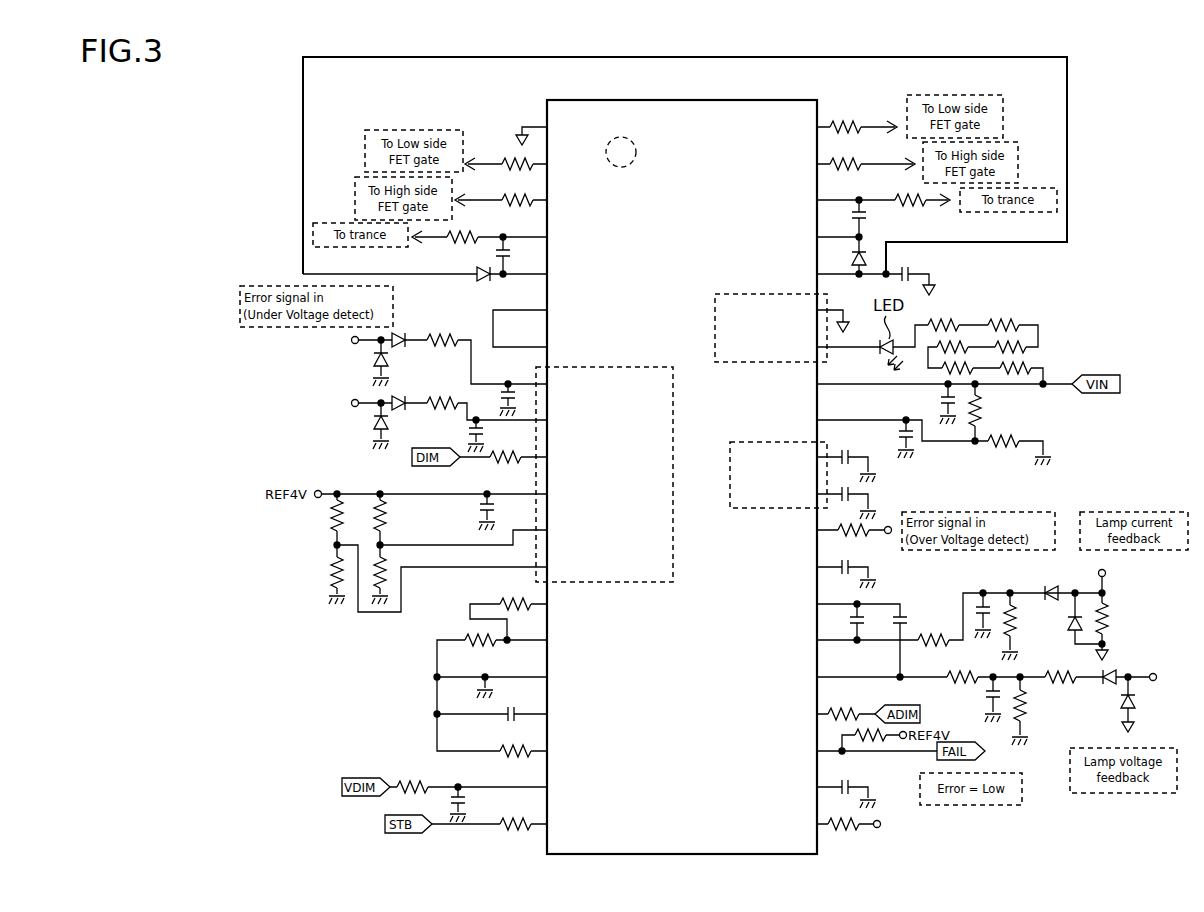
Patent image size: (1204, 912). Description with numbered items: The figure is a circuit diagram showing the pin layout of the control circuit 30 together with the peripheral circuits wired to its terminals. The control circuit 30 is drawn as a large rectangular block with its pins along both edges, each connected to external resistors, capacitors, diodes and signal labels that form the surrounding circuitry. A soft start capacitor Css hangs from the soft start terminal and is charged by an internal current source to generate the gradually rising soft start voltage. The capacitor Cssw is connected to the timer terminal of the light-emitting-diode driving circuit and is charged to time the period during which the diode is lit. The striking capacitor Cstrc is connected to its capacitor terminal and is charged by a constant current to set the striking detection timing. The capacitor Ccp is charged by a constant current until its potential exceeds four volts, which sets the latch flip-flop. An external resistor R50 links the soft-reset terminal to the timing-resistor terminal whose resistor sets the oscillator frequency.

The control circuit 30 is at (712, 100).
The external resistor R50 is at (508, 608).
The capacitor Cssw is at (860, 451).
The striking capacitor Cstrc is at (860, 488).
The soft start capacitor Css is at (850, 568).
The capacitor Ccp is at (852, 788).